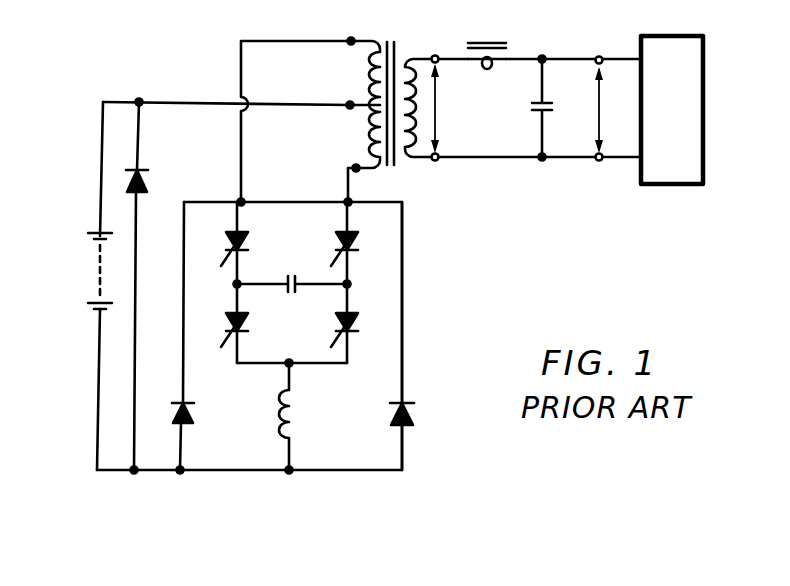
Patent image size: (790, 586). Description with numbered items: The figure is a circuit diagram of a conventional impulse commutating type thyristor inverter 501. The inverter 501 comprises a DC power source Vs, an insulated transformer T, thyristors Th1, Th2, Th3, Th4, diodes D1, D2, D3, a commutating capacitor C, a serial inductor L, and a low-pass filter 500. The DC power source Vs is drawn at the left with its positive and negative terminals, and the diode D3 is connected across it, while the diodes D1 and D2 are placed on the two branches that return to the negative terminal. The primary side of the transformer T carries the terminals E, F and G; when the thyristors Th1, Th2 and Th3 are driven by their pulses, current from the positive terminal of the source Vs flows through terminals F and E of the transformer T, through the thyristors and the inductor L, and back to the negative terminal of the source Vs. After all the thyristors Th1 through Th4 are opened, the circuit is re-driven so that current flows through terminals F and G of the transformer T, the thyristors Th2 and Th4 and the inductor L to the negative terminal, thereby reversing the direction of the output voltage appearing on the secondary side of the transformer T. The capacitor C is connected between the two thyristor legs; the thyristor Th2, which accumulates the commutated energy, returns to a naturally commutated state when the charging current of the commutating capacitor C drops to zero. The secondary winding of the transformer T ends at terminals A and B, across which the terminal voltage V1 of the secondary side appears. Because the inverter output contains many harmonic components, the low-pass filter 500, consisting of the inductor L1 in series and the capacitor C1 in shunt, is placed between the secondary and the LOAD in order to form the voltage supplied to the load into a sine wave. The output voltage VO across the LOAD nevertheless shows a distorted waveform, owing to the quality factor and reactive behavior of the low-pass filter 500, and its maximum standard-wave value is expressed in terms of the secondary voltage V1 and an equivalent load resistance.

The low-pass filter 500 is at (534, 122).
The impulse commutating type thyristor inverter 501 is at (349, 338).
The DC power source Vs is at (84, 286).
The diode D1 is at (198, 338).
The diode D2 is at (434, 289).
The diode D3 is at (153, 286).
The thyristor Th1 is at (255, 243).
The thyristor Th2 is at (364, 243).
The thyristor Th3 is at (253, 323).
The thyristor Th4 is at (362, 323).
The commutating capacitor C is at (292, 272).
The serial inductor L is at (297, 417).
The insulated transformer T is at (387, 109).
The transformer terminal E is at (350, 23).
The transformer terminal F is at (346, 86).
The transformer terminal G is at (347, 156).
The secondary terminal A is at (434, 45).
The secondary terminal B is at (434, 171).
The inductor L1 is at (487, 43).
The capacitor C1 is at (524, 108).
The terminal voltage of the secondary side of the transformer V1 is at (451, 108).
The output voltage VO is at (615, 110).
The load LOAD is at (672, 110).